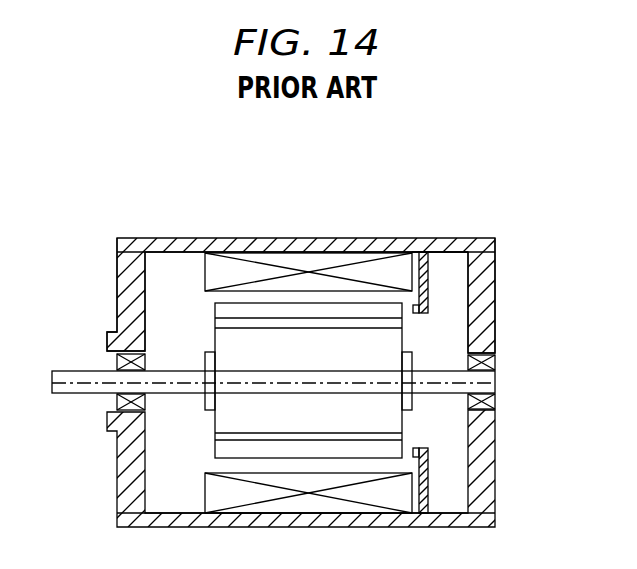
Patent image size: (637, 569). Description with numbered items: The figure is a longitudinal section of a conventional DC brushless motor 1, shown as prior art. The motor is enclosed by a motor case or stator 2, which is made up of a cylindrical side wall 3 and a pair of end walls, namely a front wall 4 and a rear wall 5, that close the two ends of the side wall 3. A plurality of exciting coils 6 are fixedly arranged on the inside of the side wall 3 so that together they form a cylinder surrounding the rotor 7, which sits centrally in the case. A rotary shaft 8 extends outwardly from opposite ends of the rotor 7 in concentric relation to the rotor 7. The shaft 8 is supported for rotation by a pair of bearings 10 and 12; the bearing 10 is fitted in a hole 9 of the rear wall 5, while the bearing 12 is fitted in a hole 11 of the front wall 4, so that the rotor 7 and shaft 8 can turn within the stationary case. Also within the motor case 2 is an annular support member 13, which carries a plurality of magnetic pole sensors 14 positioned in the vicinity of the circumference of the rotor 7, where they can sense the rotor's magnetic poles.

The DC brushless motor 1 is at (472, 218).
The motor case 2 is at (484, 238).
The cylindrical side wall 3 is at (428, 250).
The front wall 4 is at (118, 290).
The rear wall 5 is at (490, 305).
The exciting coils 6 is at (283, 260).
The rotor 7 is at (225, 412).
The rotary shaft 8 is at (70, 385).
The hole 9 is at (494, 403).
The bearing 10 is at (494, 364).
The hole 11 is at (107, 410).
The bearing 12 is at (146, 358).
The annular support member 13 is at (428, 296).
The magnetic pole sensors 14 is at (416, 313).